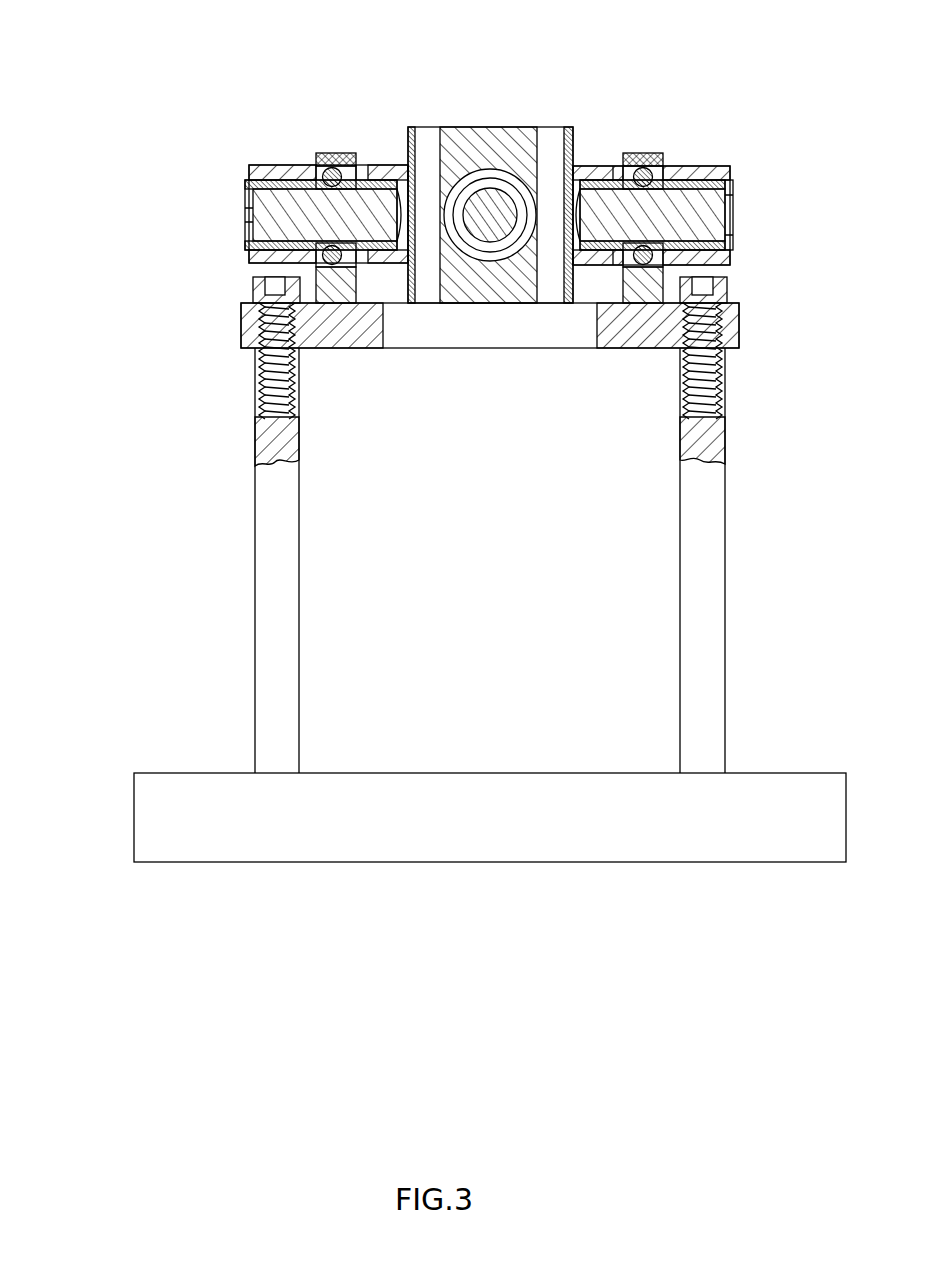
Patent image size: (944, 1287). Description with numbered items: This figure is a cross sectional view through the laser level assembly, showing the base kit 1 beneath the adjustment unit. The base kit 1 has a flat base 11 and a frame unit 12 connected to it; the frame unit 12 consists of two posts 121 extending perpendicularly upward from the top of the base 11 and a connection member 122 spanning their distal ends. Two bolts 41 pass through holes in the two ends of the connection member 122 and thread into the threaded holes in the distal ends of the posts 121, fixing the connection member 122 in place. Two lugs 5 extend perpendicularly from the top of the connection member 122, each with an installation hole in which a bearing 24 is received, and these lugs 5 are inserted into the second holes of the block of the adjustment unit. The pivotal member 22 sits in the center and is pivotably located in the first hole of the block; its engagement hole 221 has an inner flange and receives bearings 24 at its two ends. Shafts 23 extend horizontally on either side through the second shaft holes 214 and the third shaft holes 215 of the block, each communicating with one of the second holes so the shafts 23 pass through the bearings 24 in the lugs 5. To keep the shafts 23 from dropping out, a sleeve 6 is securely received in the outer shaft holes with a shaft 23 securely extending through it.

The base kit 1 is at (78, 435).
The base 11 is at (212, 780).
The frame unit 12 is at (137, 362).
The posts 121 is at (262, 435).
The connection member 122 is at (243, 330).
The bolts 41 is at (725, 285).
The pivotal member 22 is at (480, 140).
The engagement hole 221 is at (492, 260).
The second shaft holes 214 is at (383, 178).
The third shaft holes 215 is at (595, 180).
The lugs 5 is at (625, 155).
The bearings 24 is at (657, 155).
The shafts 23 is at (713, 210).
The sleeve 6 is at (725, 247).